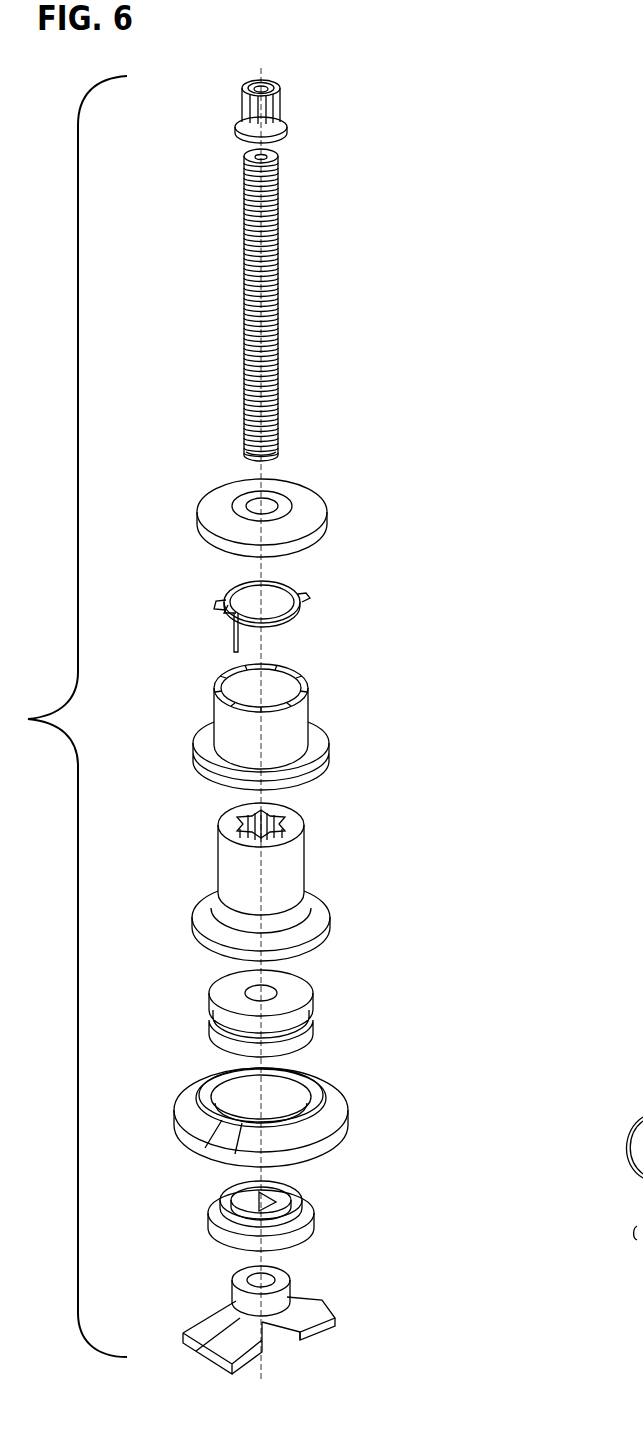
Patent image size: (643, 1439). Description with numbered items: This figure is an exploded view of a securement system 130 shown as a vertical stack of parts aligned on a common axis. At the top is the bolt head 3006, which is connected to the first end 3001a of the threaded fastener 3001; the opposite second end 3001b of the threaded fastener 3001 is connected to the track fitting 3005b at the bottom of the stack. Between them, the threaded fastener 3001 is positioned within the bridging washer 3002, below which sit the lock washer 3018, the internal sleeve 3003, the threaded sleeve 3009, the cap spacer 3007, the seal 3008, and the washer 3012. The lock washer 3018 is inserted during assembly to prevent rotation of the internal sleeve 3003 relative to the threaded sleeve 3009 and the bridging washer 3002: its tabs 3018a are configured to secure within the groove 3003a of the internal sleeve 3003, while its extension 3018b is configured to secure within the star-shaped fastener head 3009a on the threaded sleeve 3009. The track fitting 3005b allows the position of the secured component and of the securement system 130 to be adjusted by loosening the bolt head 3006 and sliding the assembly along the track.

The securement system 130 is at (566, 122).
The bolt head 3006 is at (287, 113).
The threaded fastener 3001 is at (277, 322).
The first end 3001a is at (280, 158).
The second end 3001b is at (270, 460).
The bridging washer 3002 is at (327, 510).
The lock washer 3018 is at (265, 616).
The tabs 3018a is at (218, 606).
The extension 3018b is at (232, 640).
The internal sleeve 3003 is at (268, 727).
The groove 3003a is at (216, 700).
The threaded sleeve 3009 is at (318, 883).
The star-shaped fastener head 3009a is at (300, 818).
The cap spacer 3007 is at (314, 1006).
The seal 3008 is at (348, 1120).
The washer 3012 is at (315, 1205).
The track fitting 3005b is at (335, 1310).